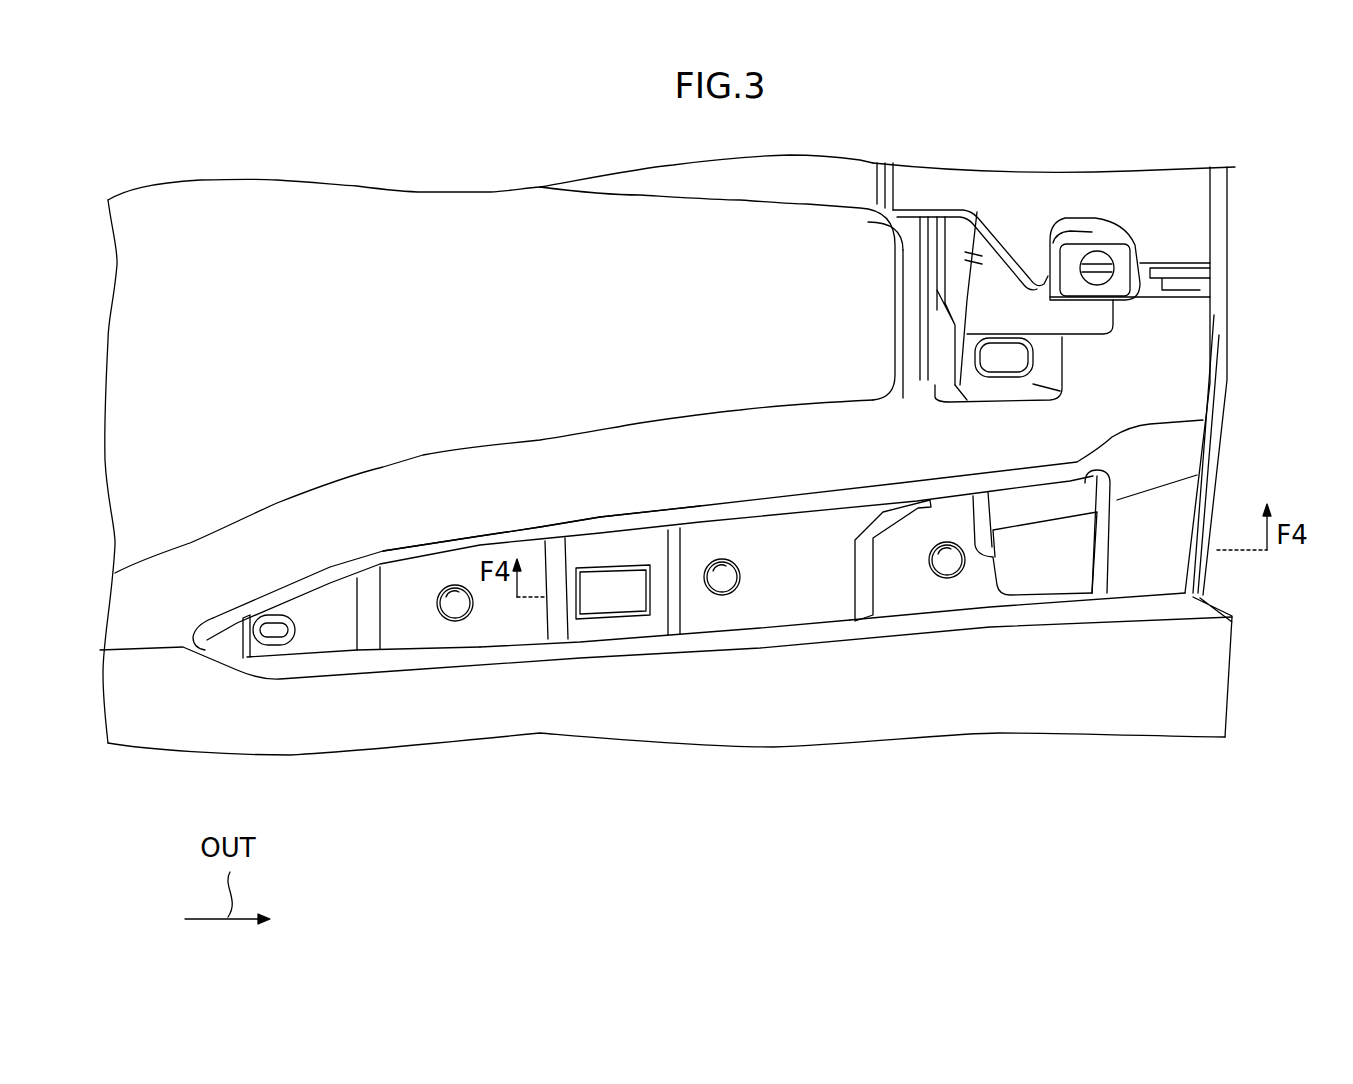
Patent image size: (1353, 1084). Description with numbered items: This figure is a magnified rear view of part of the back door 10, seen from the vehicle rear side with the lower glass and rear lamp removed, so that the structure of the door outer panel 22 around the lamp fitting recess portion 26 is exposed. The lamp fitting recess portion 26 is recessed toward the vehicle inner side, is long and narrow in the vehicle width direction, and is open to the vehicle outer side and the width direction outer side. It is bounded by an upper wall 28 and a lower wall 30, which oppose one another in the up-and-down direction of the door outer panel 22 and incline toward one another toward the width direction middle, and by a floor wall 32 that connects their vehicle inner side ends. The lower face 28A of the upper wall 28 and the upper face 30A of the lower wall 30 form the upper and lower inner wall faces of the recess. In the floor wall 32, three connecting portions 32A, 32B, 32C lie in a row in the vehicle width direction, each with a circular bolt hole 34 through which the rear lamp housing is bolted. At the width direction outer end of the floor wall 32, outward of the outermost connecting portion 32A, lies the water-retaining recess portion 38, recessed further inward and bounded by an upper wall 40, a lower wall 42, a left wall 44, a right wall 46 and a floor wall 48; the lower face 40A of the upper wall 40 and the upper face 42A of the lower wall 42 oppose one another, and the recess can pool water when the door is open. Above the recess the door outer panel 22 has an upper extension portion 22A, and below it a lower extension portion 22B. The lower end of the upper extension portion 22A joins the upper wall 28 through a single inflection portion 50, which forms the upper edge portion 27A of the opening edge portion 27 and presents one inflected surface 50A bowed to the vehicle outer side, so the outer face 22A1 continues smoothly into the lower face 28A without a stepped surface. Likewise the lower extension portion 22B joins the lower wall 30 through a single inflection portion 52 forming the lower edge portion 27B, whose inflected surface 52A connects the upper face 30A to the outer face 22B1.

The back door 10 is at (1276, 330).
The door outer panel 22 is at (664, 513).
The upper extension portion 22A is at (494, 419).
The face at the vehicle outer side of the upper extension portion 22A1 is at (520, 478).
The lower extension portion 22B is at (666, 791).
The face at the vehicle outer side of the lower extension portion 22B1 is at (543, 712).
The lamp fitting recess portion 26 is at (666, 591).
The opening edge portion 27 is at (666, 515).
The upper edge portion 27A is at (335, 564).
The lower edge portion 27B is at (407, 668).
The upper wall 28 is at (702, 481).
The lower face of the upper wall 28A is at (640, 528).
The lower wall 30 is at (670, 684).
The upper face of the lower wall 30A is at (643, 642).
The floor wall 32 is at (716, 578).
The connecting portion 32A is at (933, 587).
The connecting portion 32B is at (735, 607).
The connecting portion 32C is at (460, 633).
The bolt hole 34 is at (453, 587).
The water-retaining recess portion 38 is at (1015, 612).
The upper wall 40 is at (1037, 350).
The lower face of the upper wall 40A is at (1034, 482).
The lower wall 42 is at (1059, 588).
The upper face of the lower wall 42A is at (1027, 601).
The left wall 44 is at (949, 491).
The right wall 46 is at (1104, 537).
The floor wall 48 is at (1080, 563).
The inflection portion 50 is at (541, 446).
The inflected surface 50A is at (578, 521).
The inflection portion 52 is at (494, 713).
The inflected surface 52A is at (603, 657).